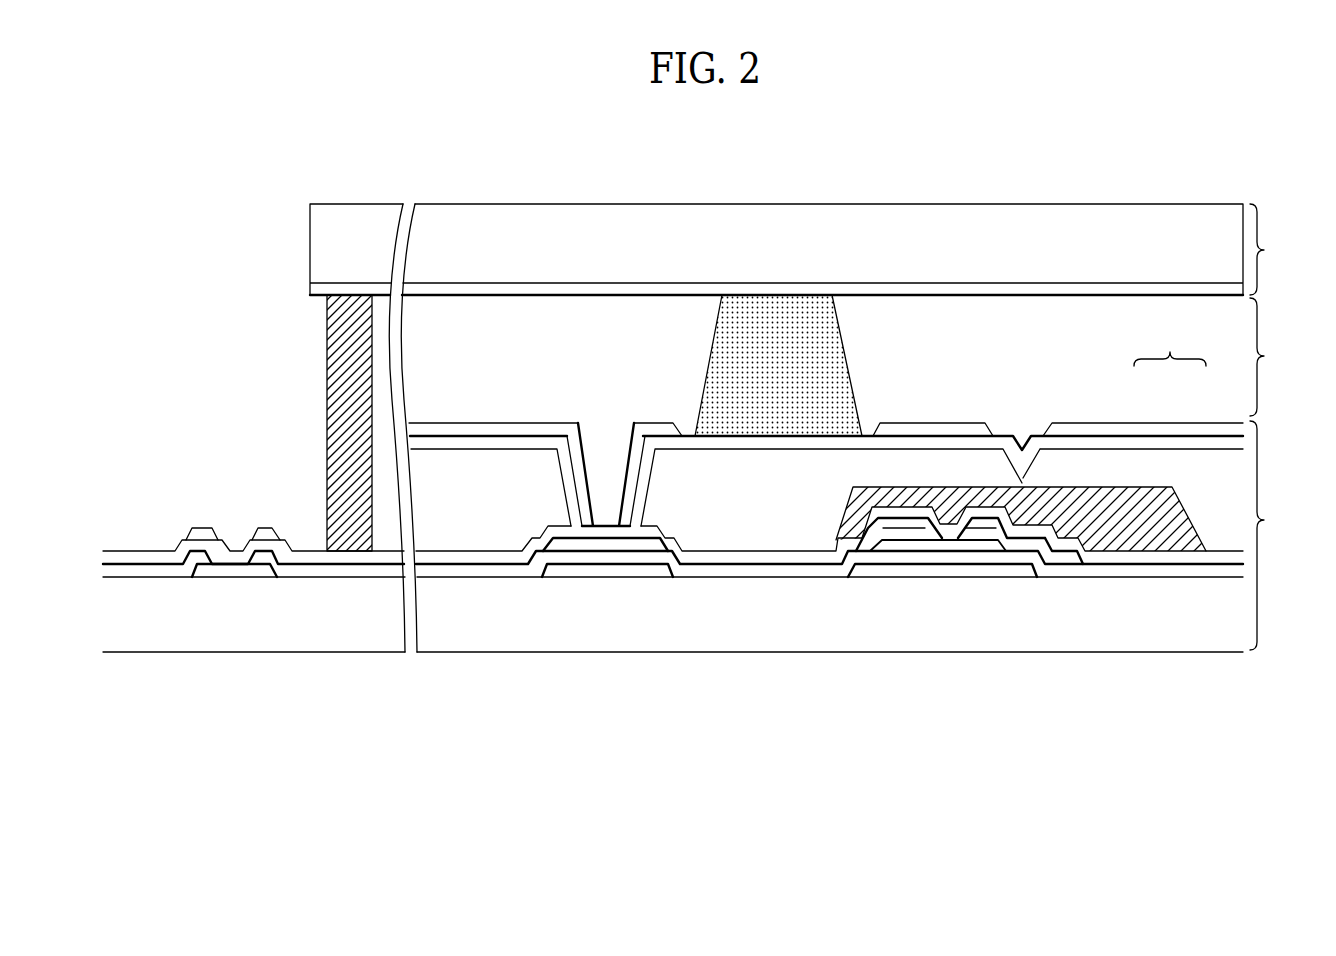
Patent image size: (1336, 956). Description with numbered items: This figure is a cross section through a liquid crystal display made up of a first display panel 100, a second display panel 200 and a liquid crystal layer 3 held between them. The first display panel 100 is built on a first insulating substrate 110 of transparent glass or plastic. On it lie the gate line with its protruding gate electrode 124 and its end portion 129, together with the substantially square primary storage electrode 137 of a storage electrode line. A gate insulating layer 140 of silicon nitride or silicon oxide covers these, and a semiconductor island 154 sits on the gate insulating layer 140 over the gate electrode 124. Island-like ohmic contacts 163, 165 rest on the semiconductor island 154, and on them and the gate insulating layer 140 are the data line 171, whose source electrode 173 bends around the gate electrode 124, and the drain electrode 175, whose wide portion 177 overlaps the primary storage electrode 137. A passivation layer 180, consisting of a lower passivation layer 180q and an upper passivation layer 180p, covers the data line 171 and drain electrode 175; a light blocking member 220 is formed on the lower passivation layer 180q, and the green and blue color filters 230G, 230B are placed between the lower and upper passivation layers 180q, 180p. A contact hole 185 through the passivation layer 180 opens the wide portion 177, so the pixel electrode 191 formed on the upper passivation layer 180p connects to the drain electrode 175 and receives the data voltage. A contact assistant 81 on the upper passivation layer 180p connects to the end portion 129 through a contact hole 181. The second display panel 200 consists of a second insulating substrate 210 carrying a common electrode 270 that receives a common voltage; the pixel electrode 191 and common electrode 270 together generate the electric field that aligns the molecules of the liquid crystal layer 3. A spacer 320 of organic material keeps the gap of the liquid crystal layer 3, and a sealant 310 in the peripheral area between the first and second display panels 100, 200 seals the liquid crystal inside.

The liquid crystal layer 3 is at (1265, 357).
The contact assistant 81 is at (262, 527).
The first display panel 100 is at (1274, 535).
The first insulating substrate 110 is at (475, 625).
The gate electrode 124 is at (927, 567).
The end portion 129 is at (228, 572).
The primary storage electrode 137 is at (575, 570).
The gate insulating layer 140 is at (298, 572).
The semiconductor island 154 is at (945, 547).
The ohmic contact 163 is at (975, 535).
The ohmic contact 165 is at (913, 535).
The data line 171 is at (1062, 555).
The source electrode 173 is at (987, 525).
The drain electrode 175 is at (898, 524).
The wide portion 177 is at (630, 547).
The passivation layer 180 is at (1170, 346).
The upper passivation layer 180p is at (1143, 440).
The lower passivation layer 180q is at (363, 558).
The contact hole 181 is at (210, 546).
The contact hole 185 is at (573, 468).
The pixel electrode 191 is at (540, 432).
The second display panel 200 is at (1274, 249).
The second insulating substrate 210 is at (1063, 232).
The light blocking member 220 is at (1142, 533).
The green color filter 230G is at (457, 467).
The blue color filter 230B is at (1070, 467).
The common electrode 270 is at (973, 290).
The sealant 310 is at (336, 361).
The spacer 320 is at (778, 318).